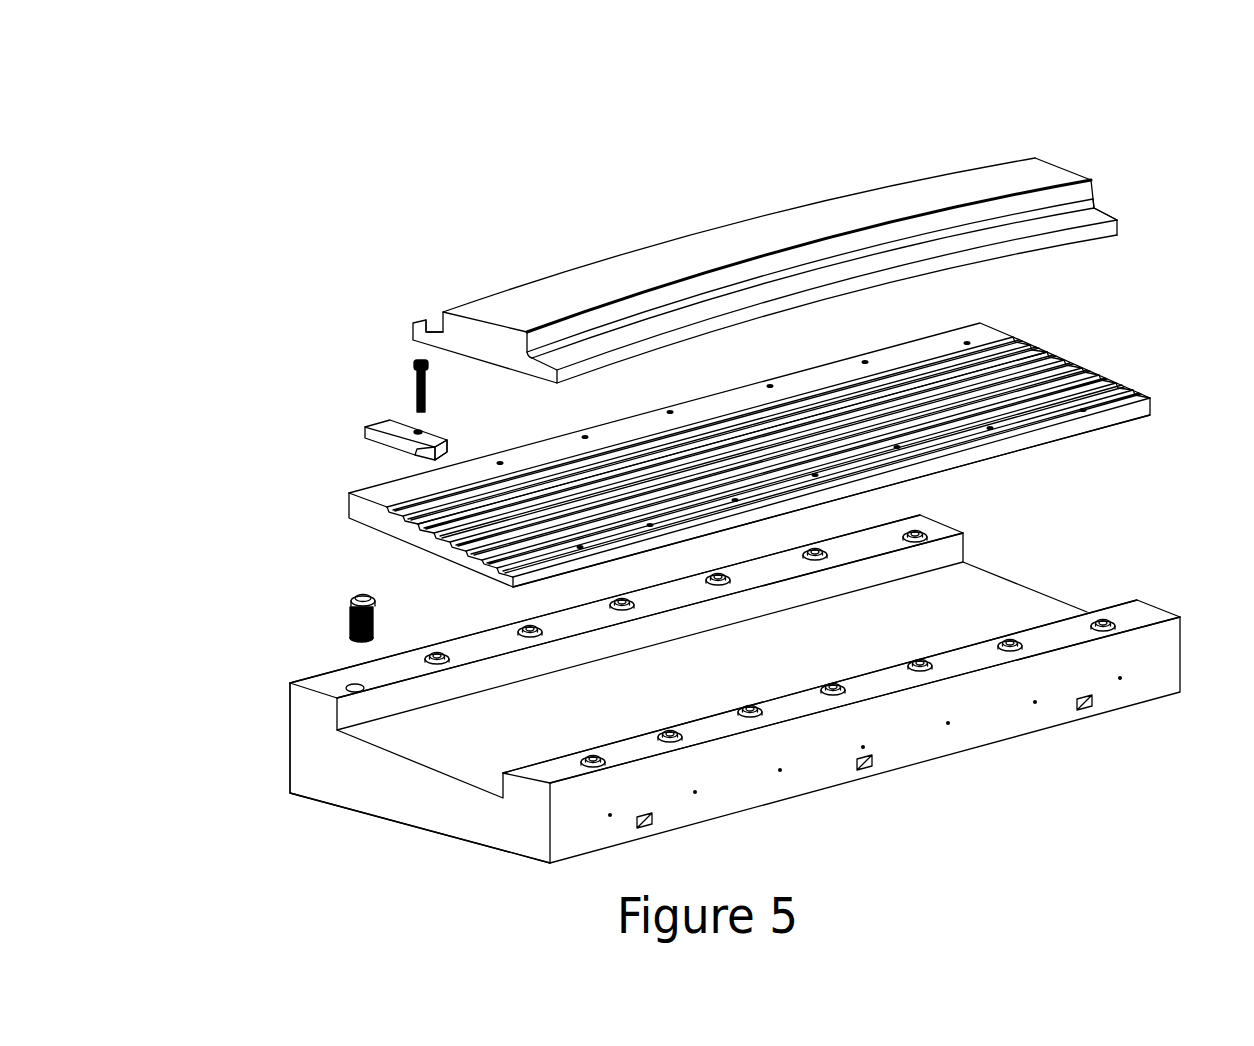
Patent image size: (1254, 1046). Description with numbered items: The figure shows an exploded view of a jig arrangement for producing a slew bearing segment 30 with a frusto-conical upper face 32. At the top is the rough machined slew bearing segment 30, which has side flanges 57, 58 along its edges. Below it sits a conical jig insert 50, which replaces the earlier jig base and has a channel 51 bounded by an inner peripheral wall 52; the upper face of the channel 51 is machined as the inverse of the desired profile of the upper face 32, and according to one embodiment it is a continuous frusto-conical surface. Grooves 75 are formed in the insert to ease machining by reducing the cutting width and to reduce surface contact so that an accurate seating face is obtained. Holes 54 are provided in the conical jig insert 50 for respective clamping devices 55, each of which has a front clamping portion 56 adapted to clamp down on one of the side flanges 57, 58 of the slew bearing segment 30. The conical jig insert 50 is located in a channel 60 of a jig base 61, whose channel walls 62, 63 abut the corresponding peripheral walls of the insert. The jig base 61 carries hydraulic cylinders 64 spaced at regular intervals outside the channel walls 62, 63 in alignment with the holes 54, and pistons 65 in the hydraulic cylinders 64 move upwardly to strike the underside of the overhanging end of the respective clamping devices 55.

The slew bearing segment 30 is at (548, 298).
The upper face 32 is at (1000, 187).
The side flange 57 is at (1080, 220).
The side flange 58 is at (433, 322).
The holes 54 is at (412, 492).
The clamping device 55 is at (383, 422).
The front clamping portion 56 is at (447, 440).
The conical jig insert 50 is at (372, 490).
The channel 51 is at (1080, 382).
The inner peripheral wall 52 is at (865, 465).
The grooves 75 is at (418, 530).
The channel 60 is at (1000, 610).
The jig base 61 is at (400, 790).
The channel wall 62 is at (480, 647).
The channel wall 63 is at (712, 727).
The hydraulic cylinders 64 is at (932, 524).
The pistons 65 is at (357, 595).